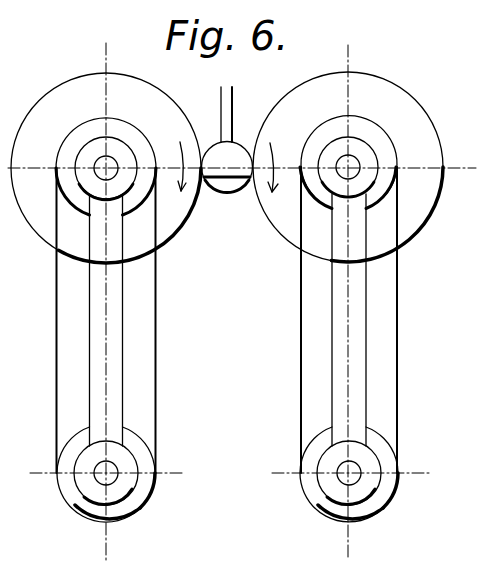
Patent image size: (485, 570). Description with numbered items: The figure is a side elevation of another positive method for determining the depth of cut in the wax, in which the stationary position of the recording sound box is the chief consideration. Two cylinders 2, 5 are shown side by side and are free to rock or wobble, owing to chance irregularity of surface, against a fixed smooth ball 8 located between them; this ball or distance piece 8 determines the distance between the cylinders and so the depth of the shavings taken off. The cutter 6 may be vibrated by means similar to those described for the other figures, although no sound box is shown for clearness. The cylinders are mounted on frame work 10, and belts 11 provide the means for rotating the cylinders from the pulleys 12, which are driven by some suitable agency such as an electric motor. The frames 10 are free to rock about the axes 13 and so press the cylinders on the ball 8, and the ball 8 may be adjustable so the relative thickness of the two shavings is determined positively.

The cylinder 2 is at (72, 76).
The cylinder 5 is at (388, 78).
The cutter 6 is at (220, 177).
The ball 8 is at (238, 194).
The frame work 10 is at (332, 408).
The belt 11 is at (301, 345).
The pulley 12 is at (63, 500).
The axis 13 is at (338, 475).